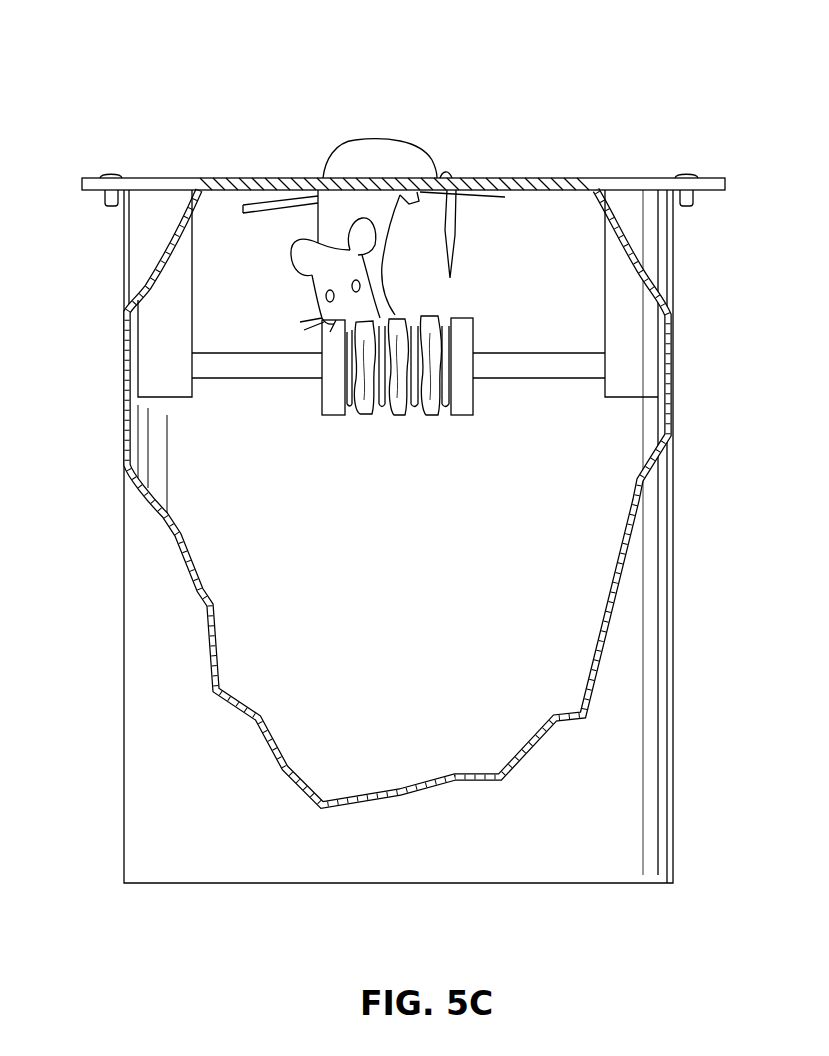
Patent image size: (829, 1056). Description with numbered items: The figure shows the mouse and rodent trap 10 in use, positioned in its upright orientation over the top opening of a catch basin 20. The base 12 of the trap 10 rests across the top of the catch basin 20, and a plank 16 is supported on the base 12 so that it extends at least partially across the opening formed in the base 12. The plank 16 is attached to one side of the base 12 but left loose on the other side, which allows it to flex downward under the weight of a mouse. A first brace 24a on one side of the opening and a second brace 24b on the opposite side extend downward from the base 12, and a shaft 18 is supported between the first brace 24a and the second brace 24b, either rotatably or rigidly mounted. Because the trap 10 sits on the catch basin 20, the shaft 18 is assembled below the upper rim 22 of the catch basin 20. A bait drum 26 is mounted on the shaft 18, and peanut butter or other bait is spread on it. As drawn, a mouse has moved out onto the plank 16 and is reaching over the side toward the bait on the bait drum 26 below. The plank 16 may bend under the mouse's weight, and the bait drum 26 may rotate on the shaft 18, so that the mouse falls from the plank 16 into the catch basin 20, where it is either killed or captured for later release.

The trap 10 is at (630, 75).
The base 12 is at (617, 178).
The plank 16 is at (252, 208).
The shaft 18 is at (266, 379).
The catch basin 20 is at (675, 664).
The upper rim 22 is at (130, 200).
The first brace 24a is at (631, 398).
The second brace 24b is at (172, 398).
The bait drum 26 is at (472, 338).